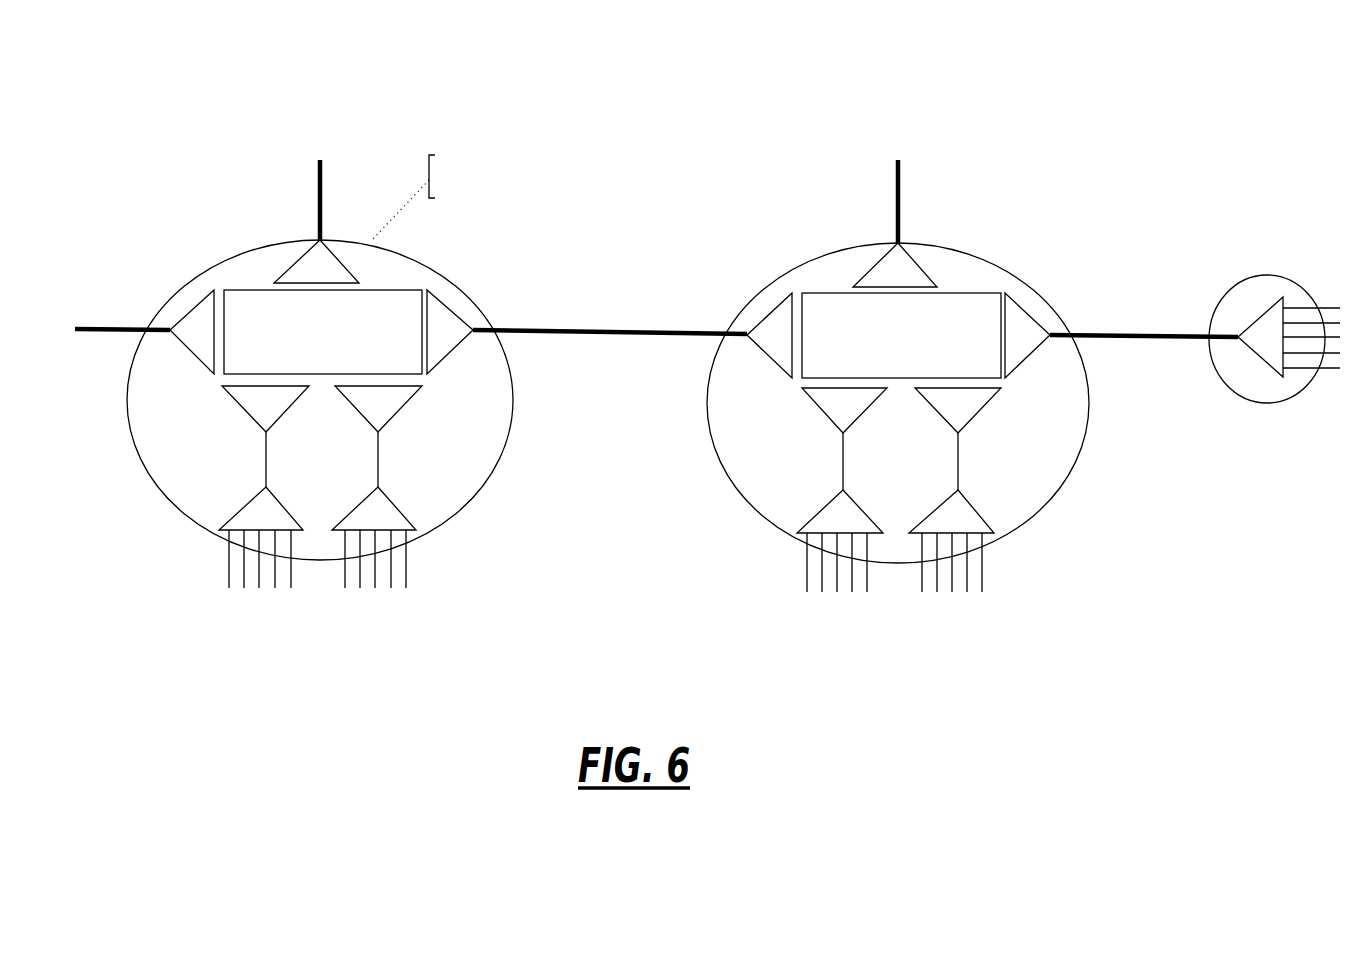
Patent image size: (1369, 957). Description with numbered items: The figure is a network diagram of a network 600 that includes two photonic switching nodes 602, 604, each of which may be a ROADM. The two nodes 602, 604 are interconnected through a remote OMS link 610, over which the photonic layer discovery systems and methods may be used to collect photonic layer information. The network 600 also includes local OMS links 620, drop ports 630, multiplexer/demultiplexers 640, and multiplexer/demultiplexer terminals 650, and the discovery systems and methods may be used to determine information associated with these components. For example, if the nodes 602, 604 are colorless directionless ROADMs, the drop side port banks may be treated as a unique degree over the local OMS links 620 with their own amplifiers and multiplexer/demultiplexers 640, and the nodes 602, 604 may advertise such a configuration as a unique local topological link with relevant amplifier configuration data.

The network 600 is at (719, 64).
The photonic switching node 602 is at (193, 522).
The photonic switching node 604 is at (770, 523).
The remote OMS link 610 is at (620, 330).
The local OMS link 620 is at (1140, 525).
The drop ports 630 is at (568, 570).
The multiplexer/demultiplexer 640 is at (578, 475).
The multiplexer/demultiplexer terminal 650 is at (1138, 155).